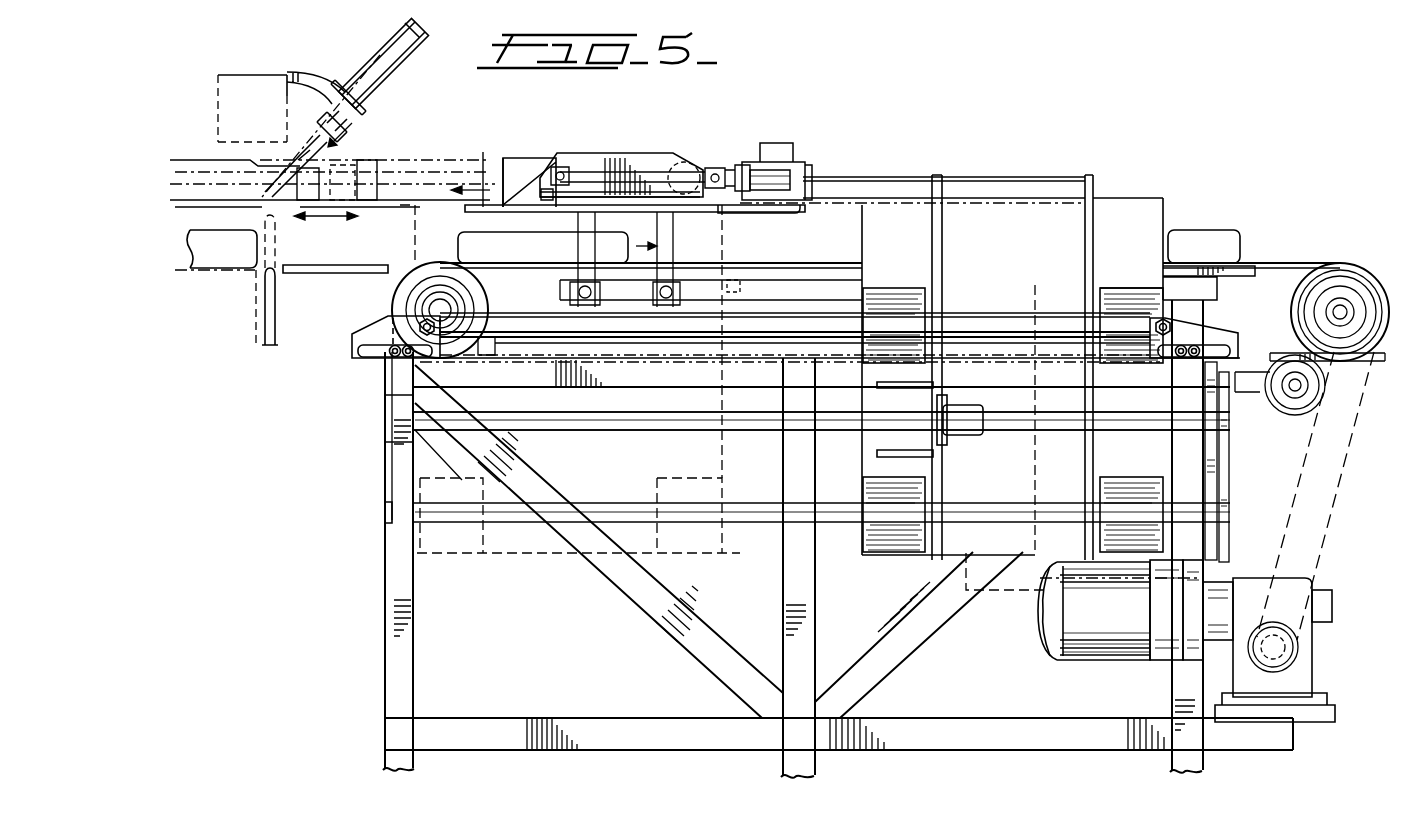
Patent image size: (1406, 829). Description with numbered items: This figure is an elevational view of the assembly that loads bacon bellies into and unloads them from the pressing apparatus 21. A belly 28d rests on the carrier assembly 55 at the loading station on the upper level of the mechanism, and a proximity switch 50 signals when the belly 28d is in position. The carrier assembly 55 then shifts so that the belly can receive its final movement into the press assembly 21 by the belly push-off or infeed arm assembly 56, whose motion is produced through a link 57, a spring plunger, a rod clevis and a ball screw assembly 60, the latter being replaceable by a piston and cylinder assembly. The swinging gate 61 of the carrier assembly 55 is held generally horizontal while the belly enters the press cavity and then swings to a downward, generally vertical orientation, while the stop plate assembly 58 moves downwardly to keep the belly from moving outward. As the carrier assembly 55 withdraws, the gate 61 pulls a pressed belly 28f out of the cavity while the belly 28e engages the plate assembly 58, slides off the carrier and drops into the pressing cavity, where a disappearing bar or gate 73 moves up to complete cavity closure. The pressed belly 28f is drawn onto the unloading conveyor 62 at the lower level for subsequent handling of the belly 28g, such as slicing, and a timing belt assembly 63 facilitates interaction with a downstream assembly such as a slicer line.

The pressing apparatus 21 is at (207, 108).
The belly 28d is at (524, 168).
The belly 28e is at (1218, 260).
The pressed belly 28f is at (235, 259).
The belly 28g is at (556, 260).
The proximity switch 50 is at (777, 145).
The carrier assembly 55 is at (654, 147).
The infeed arm assembly 56 is at (591, 172).
The link 57 is at (674, 170).
The stop plate assembly 58 is at (312, 114).
The ball screw assembly 60 is at (604, 425).
The swinging gate 61 is at (472, 168).
The unloading conveyor 62 is at (380, 283).
The timing belt assembly 63 is at (1357, 428).
The gate 73 is at (277, 320).